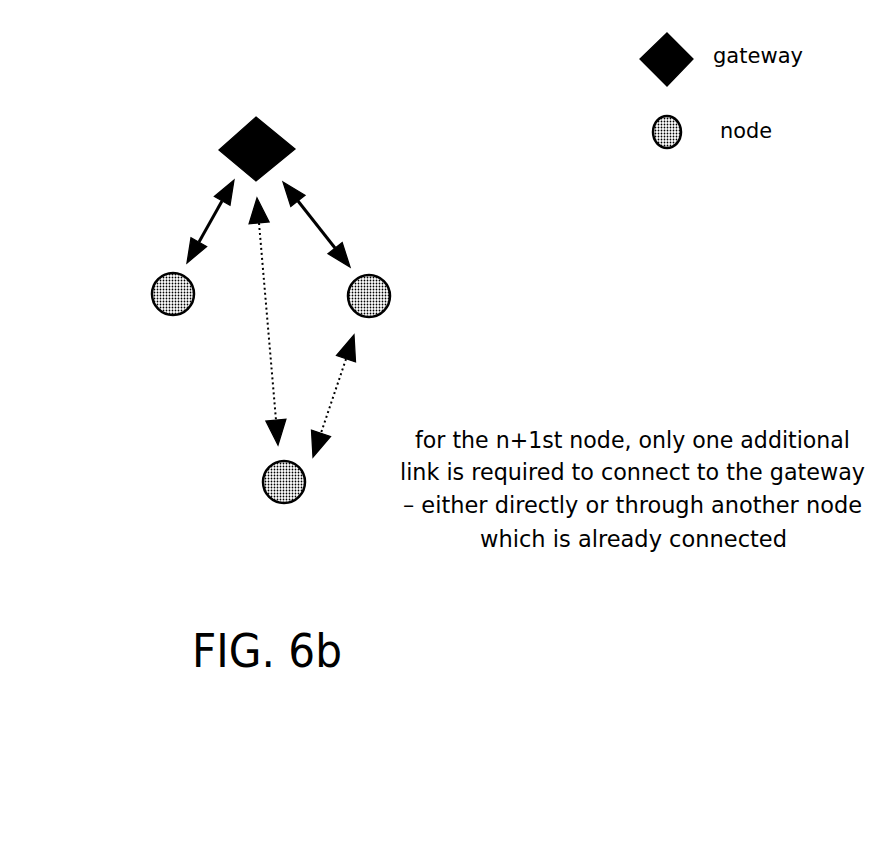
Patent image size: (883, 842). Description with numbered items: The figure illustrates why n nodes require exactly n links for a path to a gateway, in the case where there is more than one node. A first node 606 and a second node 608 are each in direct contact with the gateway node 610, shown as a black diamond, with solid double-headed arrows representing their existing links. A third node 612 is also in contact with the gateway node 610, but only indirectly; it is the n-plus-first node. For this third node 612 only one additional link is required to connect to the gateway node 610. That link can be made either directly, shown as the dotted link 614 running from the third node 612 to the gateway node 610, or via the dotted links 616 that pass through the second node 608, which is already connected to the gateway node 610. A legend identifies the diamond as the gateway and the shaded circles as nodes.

The first node 606 is at (140, 282).
The second node 608 is at (395, 298).
The gateway node 610 is at (230, 126).
The third node 612 is at (252, 480).
The direct link 614 is at (258, 365).
The links through another node 616 is at (320, 217).